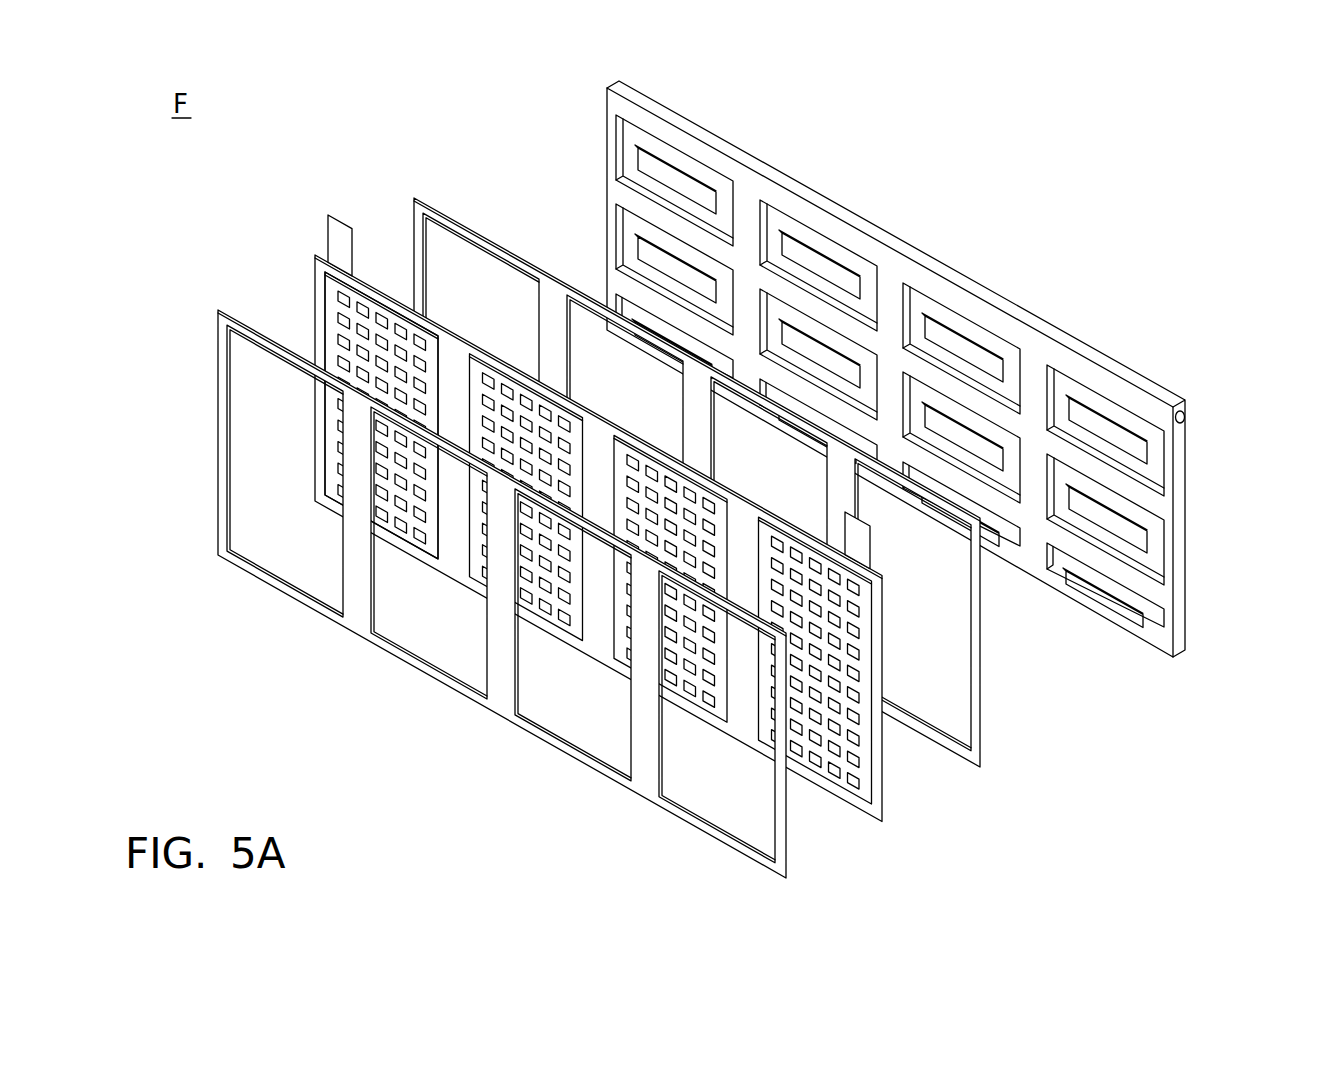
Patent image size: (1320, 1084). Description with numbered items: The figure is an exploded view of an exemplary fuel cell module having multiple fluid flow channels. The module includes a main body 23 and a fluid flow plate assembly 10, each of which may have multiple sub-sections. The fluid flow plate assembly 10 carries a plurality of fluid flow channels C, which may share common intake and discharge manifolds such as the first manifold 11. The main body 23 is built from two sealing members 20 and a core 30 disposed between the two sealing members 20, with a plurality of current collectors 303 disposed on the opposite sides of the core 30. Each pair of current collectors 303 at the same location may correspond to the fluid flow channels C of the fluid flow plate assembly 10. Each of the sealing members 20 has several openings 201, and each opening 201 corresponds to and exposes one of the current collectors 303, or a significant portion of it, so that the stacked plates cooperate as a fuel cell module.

The fluid flow plate assembly 10 is at (945, 367).
The first manifold 11 is at (1181, 406).
The fluid flow channels C is at (690, 160).
The sealing members 20 is at (652, 521).
The openings 201 is at (469, 262).
The core 30 is at (620, 523).
The current collectors 303 is at (541, 514).
The main body 23 is at (656, 521).